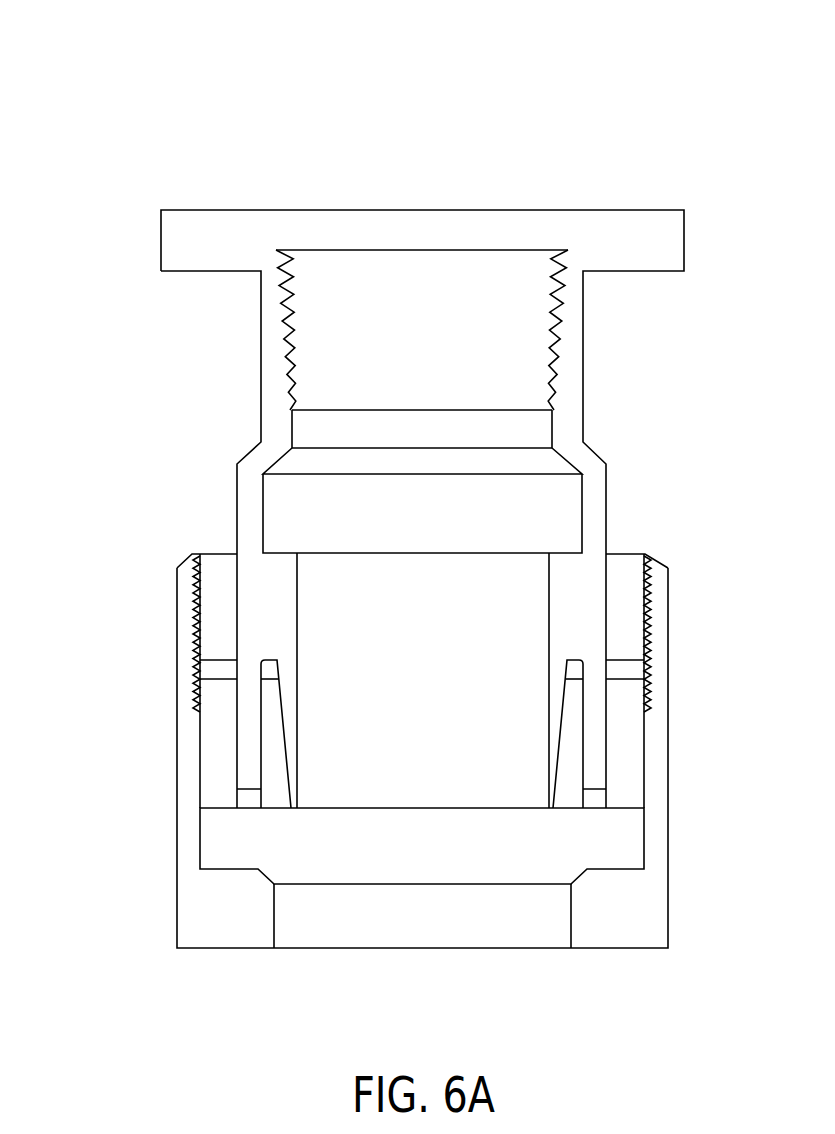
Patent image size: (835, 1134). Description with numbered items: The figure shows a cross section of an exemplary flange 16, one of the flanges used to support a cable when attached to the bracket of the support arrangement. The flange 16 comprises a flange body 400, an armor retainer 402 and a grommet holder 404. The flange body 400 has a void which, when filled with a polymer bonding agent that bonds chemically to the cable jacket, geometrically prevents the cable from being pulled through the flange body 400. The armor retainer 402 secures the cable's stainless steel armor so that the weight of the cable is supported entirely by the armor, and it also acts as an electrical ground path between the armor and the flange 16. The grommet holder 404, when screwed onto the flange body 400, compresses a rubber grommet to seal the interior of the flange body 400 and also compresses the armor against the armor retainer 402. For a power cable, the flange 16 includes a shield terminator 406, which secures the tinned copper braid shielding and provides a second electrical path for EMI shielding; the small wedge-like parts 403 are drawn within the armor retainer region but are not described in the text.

The flange 16 is at (516, 124).
The flange body 400 is at (174, 241).
The shield terminator 406 is at (524, 344).
The armor retainer 402 is at (626, 742).
The wedge / locking member 403 is at (254, 702).
The grommet holder 404 is at (188, 894).